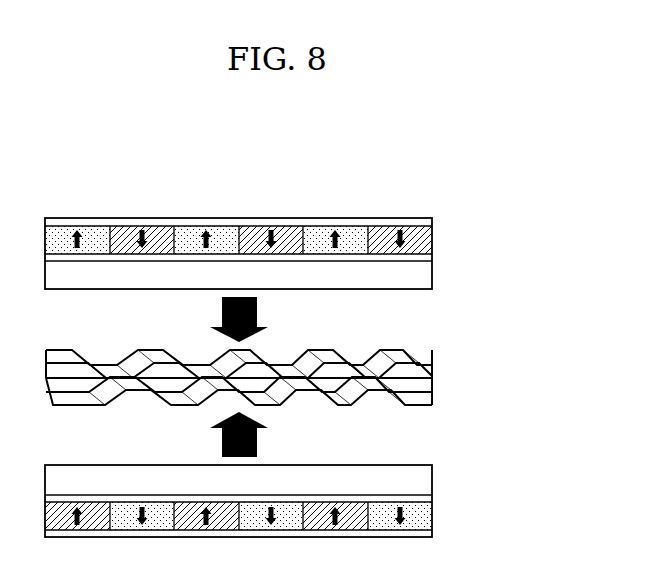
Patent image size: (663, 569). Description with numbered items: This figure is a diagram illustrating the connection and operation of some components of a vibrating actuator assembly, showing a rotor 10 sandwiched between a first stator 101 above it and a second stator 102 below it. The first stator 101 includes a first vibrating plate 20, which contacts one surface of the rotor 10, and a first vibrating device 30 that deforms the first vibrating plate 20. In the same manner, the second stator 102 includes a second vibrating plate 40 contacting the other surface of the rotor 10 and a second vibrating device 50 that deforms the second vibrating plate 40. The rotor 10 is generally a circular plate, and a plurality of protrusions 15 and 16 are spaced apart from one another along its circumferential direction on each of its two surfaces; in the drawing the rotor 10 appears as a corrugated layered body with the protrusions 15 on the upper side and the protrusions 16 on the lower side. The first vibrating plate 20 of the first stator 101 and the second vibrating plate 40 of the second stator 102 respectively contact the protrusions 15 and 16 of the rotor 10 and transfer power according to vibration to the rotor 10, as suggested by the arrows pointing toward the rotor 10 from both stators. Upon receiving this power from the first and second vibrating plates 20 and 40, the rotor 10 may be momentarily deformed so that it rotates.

The rotor 10 is at (267, 378).
The protrusions 15 is at (255, 360).
The protrusions 16 is at (345, 407).
The first vibrating plate 20 is at (424, 273).
The first vibrating device 30 is at (438, 220).
The second vibrating plate 40 is at (424, 482).
The second vibrating device 50 is at (438, 497).
The first stator 101 is at (505, 233).
The second stator 102 is at (505, 470).